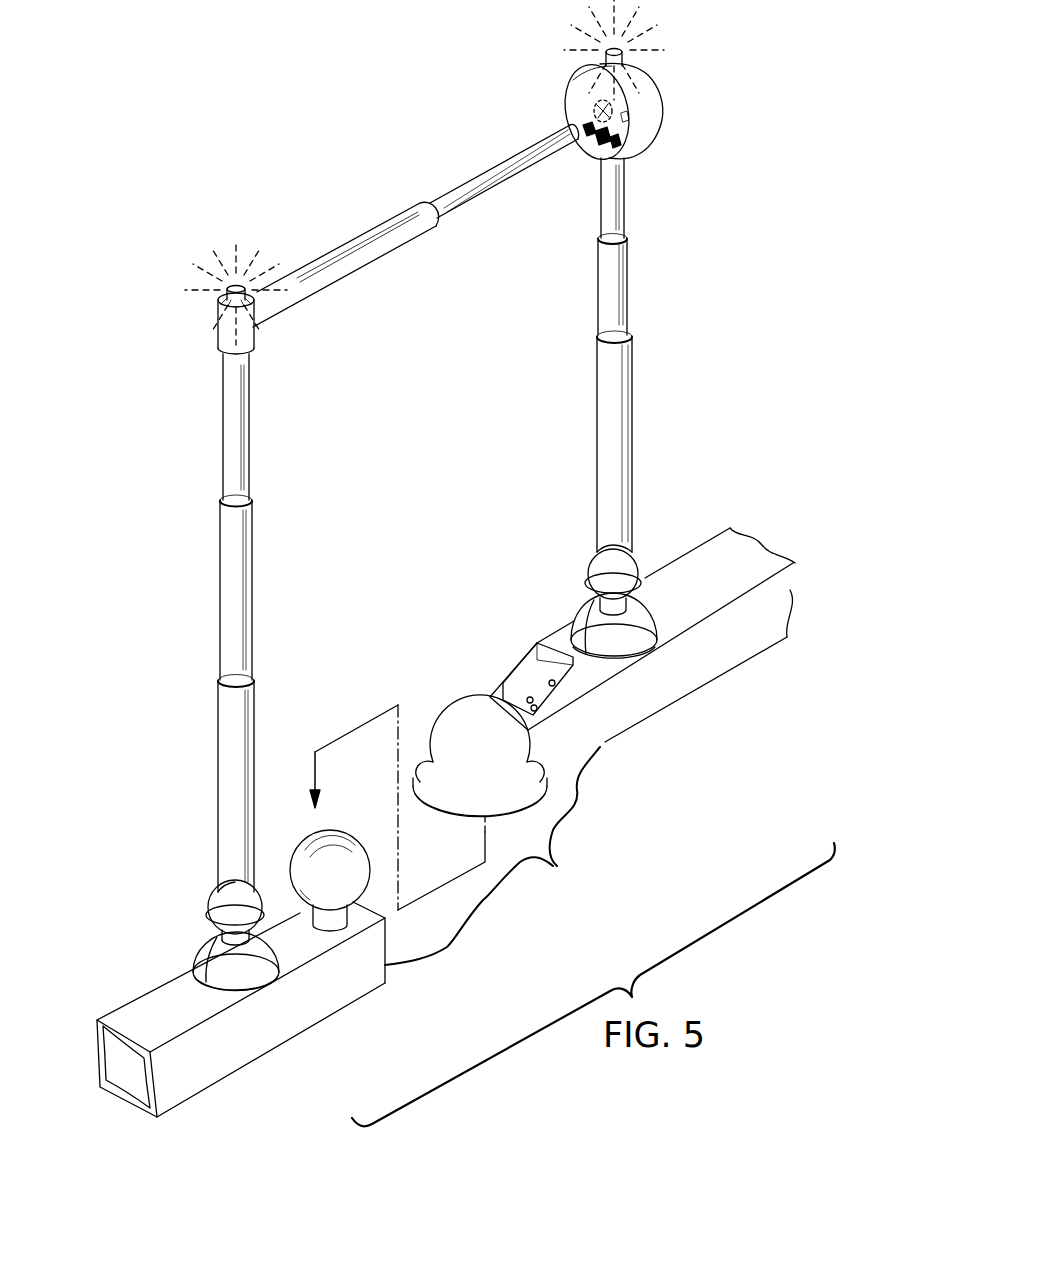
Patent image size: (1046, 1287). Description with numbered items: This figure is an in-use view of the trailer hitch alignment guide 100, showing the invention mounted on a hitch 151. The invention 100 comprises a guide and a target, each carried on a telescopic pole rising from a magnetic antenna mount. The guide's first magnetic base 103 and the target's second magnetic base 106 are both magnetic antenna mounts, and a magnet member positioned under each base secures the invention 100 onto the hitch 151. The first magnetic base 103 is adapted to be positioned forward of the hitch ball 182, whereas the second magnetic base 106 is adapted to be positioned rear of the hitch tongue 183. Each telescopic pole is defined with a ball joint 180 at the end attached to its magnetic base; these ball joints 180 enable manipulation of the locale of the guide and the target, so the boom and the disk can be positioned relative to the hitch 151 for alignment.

The trailer hitch alignment guide 100 is at (167, 158).
The first magnetic base 103 is at (208, 952).
The second magnetic base 106 is at (642, 622).
The hitch 151 is at (499, 856).
The ball joint 180 is at (208, 897).
The hitch ball 182 is at (303, 860).
The hitch tongue 183 is at (470, 720).